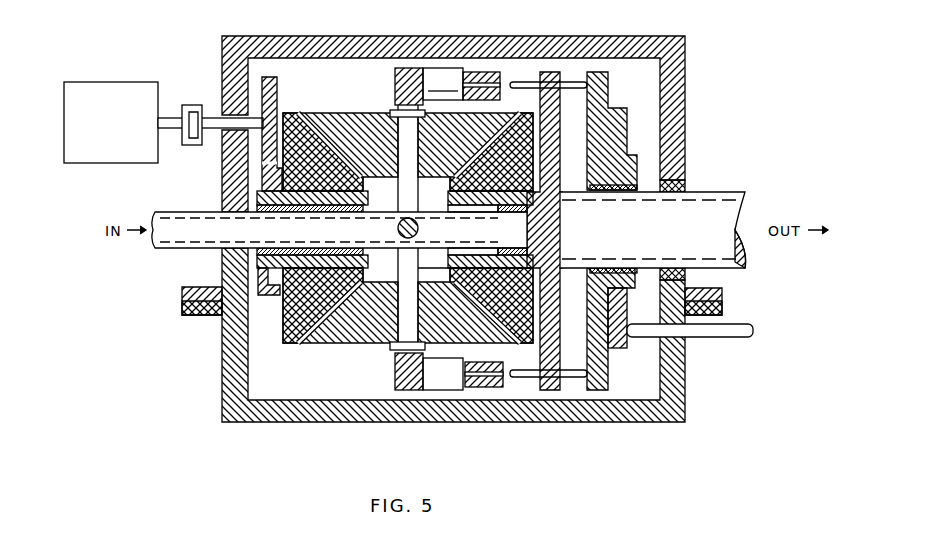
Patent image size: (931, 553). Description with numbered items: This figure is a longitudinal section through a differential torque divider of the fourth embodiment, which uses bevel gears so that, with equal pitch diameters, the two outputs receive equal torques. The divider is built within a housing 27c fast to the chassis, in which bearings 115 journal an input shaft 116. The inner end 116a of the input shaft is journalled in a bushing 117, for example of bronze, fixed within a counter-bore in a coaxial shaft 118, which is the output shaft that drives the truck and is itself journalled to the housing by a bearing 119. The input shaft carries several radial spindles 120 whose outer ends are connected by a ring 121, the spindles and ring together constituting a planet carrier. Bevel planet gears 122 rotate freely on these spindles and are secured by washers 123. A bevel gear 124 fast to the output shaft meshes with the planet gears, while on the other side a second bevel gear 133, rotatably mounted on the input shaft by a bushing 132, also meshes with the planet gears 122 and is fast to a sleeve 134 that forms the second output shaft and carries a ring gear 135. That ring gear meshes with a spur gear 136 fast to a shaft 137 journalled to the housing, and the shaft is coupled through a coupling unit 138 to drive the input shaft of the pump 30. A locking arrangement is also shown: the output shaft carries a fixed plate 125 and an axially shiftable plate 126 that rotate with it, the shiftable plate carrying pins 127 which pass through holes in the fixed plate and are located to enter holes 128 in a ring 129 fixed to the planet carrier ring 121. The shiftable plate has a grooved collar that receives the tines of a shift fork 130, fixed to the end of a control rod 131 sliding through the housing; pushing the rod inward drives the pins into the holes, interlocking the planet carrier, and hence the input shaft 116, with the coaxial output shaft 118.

The housing 27c is at (383, 40).
The pump 30 is at (128, 87).
The bearings 115 is at (222, 255).
The input shaft 116 is at (188, 212).
The inner end of the input shaft 116a is at (509, 230).
The bushing 117 is at (493, 209).
The coaxial shaft 118 is at (740, 204).
The bearing 119 is at (688, 185).
The radial spindles 120 is at (398, 226).
The ring 121 is at (395, 372).
The bevel planet gears 122 is at (372, 115).
The washers 123 is at (425, 115).
The bevel gear 124 is at (523, 115).
The fixed plate 125 is at (545, 72).
The axially shiftable plate 126 is at (605, 97).
The pins 127 is at (573, 83).
The holes 128 is at (487, 87).
The ring 129 is at (429, 86).
The shift fork 130 is at (613, 348).
The control rod 131 is at (705, 333).
The bushing 132 is at (295, 210).
The second bevel gear 133 is at (283, 332).
The sleeve 134 is at (366, 258).
The ring gear 135 is at (256, 292).
The spur gear 136 is at (281, 92).
The shaft 137 is at (217, 112).
The coupling unit 138 is at (193, 145).